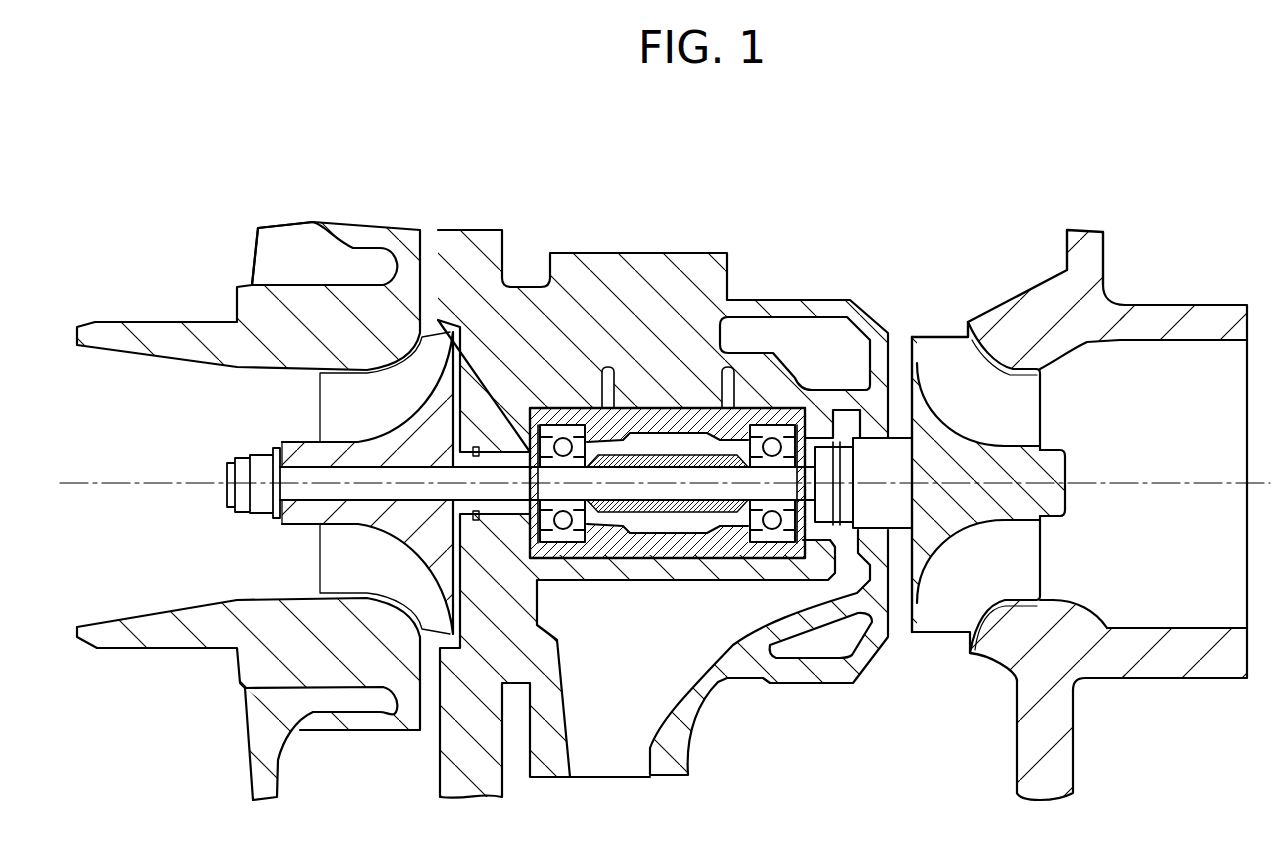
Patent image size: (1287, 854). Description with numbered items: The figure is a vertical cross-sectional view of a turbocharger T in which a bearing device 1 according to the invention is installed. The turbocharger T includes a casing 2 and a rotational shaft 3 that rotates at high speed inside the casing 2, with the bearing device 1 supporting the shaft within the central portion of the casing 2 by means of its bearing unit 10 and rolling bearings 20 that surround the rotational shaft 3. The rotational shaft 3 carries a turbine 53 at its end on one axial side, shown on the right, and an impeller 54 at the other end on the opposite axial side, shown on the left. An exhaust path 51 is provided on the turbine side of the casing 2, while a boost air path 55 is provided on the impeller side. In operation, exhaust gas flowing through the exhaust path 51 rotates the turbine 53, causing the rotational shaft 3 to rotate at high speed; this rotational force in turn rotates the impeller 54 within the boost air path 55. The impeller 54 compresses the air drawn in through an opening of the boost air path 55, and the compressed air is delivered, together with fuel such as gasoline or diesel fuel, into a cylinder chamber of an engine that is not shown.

The bearing device 1 is at (734, 578).
The casing 2 is at (478, 252).
The rotational shaft 3 is at (675, 487).
The bearing unit 10 is at (683, 407).
The rolling bearing 20 is at (555, 407).
The exhaust path 51 is at (1195, 340).
The turbine 53 is at (937, 353).
The impeller 54 is at (332, 559).
The boost air path 55 is at (130, 353).
The turbocharger T is at (824, 226).